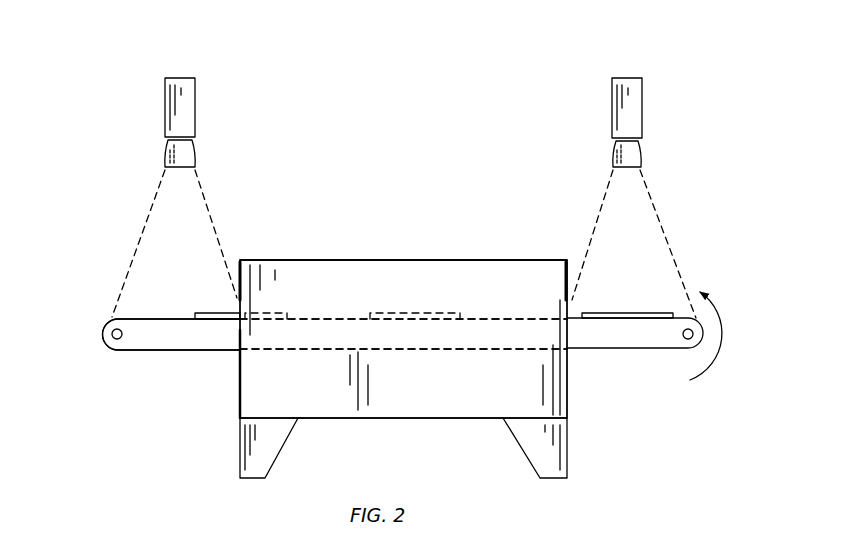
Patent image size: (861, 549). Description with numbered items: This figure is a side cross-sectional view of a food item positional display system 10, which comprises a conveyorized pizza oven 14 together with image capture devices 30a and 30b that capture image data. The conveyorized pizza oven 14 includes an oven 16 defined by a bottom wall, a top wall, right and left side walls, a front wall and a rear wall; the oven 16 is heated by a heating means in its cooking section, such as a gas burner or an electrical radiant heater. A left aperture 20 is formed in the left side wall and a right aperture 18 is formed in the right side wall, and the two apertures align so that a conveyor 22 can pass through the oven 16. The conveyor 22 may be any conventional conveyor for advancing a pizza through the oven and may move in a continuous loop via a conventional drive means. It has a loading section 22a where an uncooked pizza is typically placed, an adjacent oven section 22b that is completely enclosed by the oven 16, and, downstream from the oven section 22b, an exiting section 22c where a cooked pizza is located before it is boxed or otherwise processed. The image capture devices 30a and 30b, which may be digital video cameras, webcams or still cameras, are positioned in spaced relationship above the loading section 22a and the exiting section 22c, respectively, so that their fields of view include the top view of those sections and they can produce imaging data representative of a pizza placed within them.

The food item positional display system 10 is at (107, 107).
The conveyorized pizza oven 14 is at (366, 258).
The oven 16 is at (442, 258).
The right aperture 18 is at (572, 305).
The left aperture 20 is at (240, 302).
The conveyor 22 is at (100, 340).
The loading section 22a is at (582, 320).
The oven section 22b is at (349, 322).
The exiting section 22c is at (170, 322).
The image capture device 30a is at (612, 122).
The image capture device 30b is at (196, 117).